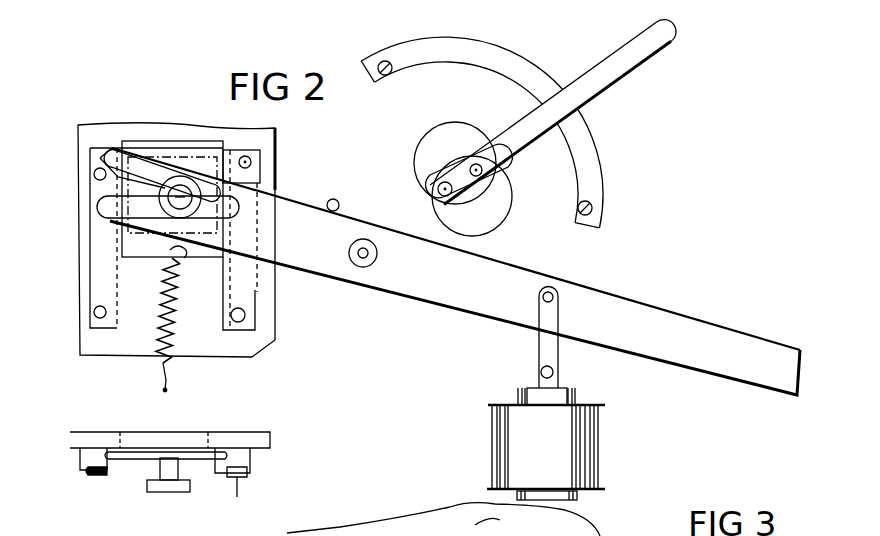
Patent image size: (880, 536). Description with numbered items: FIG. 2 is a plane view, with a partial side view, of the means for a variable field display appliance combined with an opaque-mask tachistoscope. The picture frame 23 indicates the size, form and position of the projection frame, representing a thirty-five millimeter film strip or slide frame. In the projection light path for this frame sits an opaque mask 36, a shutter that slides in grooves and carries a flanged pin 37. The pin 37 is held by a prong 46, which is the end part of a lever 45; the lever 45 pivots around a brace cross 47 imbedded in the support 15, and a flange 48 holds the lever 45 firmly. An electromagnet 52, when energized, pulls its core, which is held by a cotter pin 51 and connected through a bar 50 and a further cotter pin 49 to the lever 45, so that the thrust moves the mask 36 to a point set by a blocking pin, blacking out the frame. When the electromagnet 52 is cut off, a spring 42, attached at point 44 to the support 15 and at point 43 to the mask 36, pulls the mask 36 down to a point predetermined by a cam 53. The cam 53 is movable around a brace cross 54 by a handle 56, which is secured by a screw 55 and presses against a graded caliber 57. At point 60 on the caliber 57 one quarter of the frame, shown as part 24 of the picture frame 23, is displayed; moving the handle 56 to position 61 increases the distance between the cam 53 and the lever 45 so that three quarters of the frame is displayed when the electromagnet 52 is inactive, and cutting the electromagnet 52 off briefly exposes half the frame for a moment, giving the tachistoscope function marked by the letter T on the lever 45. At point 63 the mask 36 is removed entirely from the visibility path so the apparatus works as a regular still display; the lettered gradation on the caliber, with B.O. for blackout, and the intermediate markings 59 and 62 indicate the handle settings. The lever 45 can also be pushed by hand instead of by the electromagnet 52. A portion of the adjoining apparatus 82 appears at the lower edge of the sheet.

The support 15 is at (283, 130).
The picture frame 23 is at (240, 148).
The part of projection frame 24 is at (187, 157).
The opaque mask 36 is at (156, 146).
The flanged pin 37 is at (180, 490).
The spring 42 is at (171, 325).
The spring attachment point on mask 43 is at (188, 267).
The spring attachment point on support 44 is at (170, 392).
The lever 45 is at (697, 327).
The prong 46 is at (101, 157).
The brace cross 47 is at (367, 252).
The flange 48 is at (374, 262).
The cotter pin 49 is at (543, 294).
The bar 50 is at (560, 316).
The cotter pin 51 is at (540, 373).
The electromagnet 52 is at (600, 458).
The cam 53 is at (420, 148).
The brace cross 54 is at (432, 197).
The screw 55 is at (480, 158).
The handle 56 is at (650, 52).
The graded caliber 57 is at (590, 190).
The B.O. marking 59 is at (595, 152).
The point on caliber 60 is at (580, 104).
The position on caliber 61 is at (563, 90).
The 3/4 marking 62 is at (492, 45).
The point on caliber 63 is at (436, 38).
The part of FIG 3 82 is at (506, 526).